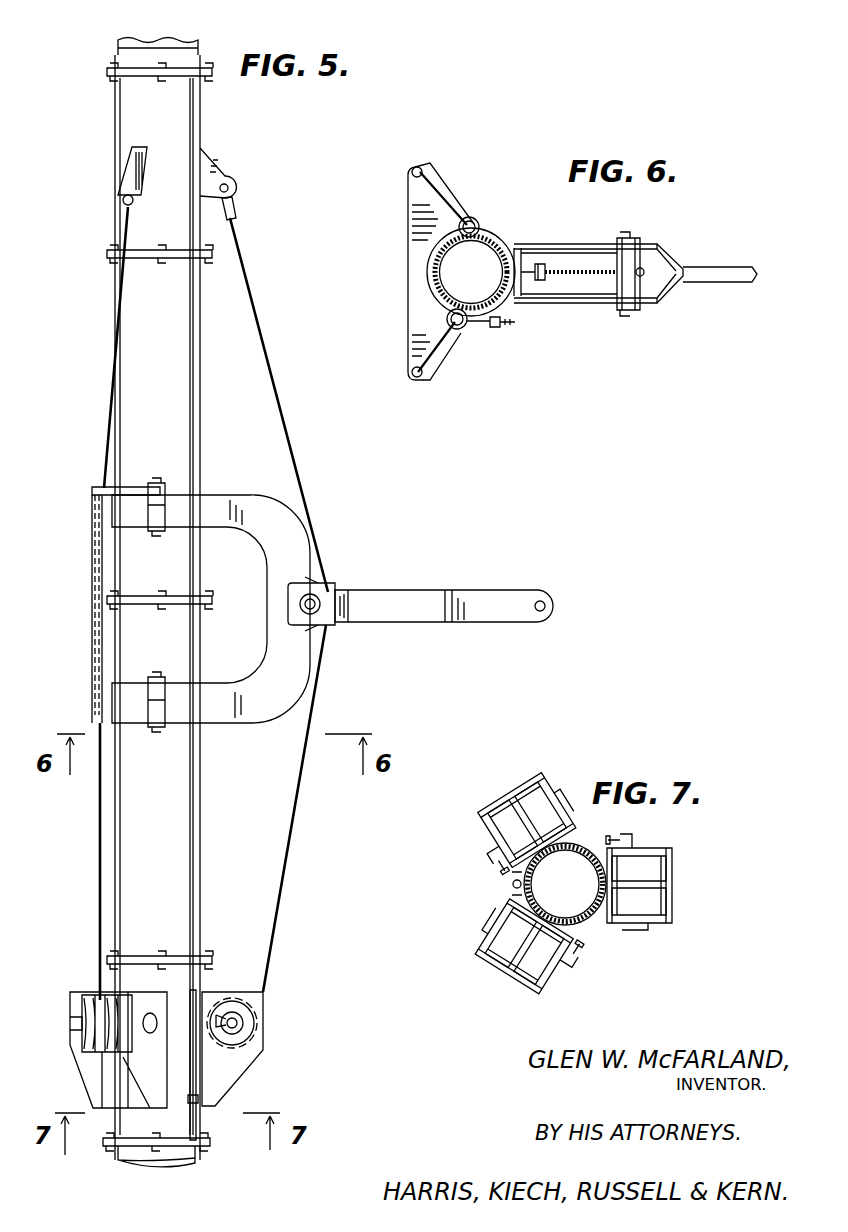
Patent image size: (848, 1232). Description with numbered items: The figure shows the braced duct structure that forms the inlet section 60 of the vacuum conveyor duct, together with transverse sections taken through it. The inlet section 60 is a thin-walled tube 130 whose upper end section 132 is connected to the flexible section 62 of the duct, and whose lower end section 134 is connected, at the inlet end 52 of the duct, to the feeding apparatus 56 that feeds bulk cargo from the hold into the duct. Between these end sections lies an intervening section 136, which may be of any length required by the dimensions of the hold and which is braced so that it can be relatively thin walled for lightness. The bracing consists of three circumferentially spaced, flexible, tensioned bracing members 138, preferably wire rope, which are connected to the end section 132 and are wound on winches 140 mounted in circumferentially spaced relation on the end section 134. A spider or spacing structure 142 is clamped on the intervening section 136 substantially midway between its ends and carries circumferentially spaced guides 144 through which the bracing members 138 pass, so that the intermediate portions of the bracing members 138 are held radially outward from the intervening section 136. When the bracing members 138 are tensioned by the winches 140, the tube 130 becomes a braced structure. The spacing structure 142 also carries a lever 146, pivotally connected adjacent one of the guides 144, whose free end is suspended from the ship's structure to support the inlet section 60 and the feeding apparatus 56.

In FIG. 5, the inlet end 52 is at (172, 1147).
In FIG. 5, the feeding apparatus 56 is at (126, 1173).
In FIG. 5, the inlet section 60 is at (188, 607).
In FIG. 5, the flexible section 62 is at (177, 34).
In FIG. 5, the thin-walled tube 130 is at (189, 141).
In FIG. 5, the end section 132 is at (104, 162).
In FIG. 5, the end section 134 is at (232, 1065).
In FIG. 7, the end section 134 is at (578, 905).
In FIG. 5, the intervening section 136 is at (90, 606).
In FIG. 6, the intervening section 136 is at (487, 262).
In FIG. 5, the bracing members 138 is at (194, 603).
In FIG. 6, the bracing members 138 is at (511, 288).
In FIG. 7, the bracing members 138 is at (599, 885).
In FIG. 5, the winches 140 is at (183, 1032).
In FIG. 7, the winches 140 is at (597, 878).
In FIG. 5, the spacing structure 142 is at (229, 605).
In FIG. 6, the spacing structure 142 is at (467, 268).
In FIG. 5, the guides 144 is at (223, 609).
In FIG. 6, the guides 144 is at (560, 252).
In FIG. 5, the lever 146 is at (444, 589).
In FIG. 6, the lever 146 is at (720, 296).